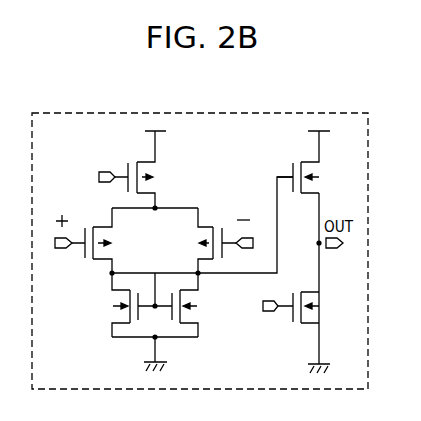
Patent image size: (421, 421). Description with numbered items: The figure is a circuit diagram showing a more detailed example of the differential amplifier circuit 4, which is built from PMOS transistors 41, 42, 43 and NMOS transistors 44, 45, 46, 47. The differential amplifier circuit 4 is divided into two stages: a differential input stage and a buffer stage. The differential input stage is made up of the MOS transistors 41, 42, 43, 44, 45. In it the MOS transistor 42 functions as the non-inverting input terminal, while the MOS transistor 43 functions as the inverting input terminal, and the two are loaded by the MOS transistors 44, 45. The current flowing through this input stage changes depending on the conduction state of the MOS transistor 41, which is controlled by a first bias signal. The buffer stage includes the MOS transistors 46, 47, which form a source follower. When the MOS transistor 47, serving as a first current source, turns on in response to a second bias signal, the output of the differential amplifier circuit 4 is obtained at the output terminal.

The differential amplifier circuit 4 is at (149, 114).
The MOS transistor 41 is at (155, 171).
The MOS transistor 42 is at (88, 264).
The MOS transistor 43 is at (217, 225).
The MOS transistor 44 is at (110, 316).
The MOS transistor 45 is at (202, 316).
The MOS transistor 46 is at (288, 165).
The MOS transistor 47 is at (287, 318).